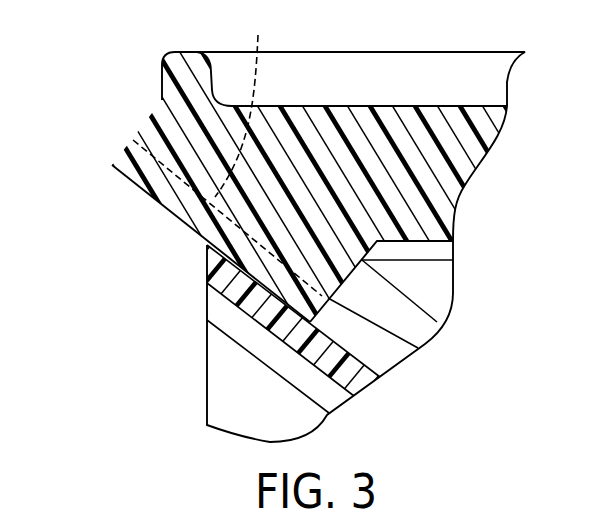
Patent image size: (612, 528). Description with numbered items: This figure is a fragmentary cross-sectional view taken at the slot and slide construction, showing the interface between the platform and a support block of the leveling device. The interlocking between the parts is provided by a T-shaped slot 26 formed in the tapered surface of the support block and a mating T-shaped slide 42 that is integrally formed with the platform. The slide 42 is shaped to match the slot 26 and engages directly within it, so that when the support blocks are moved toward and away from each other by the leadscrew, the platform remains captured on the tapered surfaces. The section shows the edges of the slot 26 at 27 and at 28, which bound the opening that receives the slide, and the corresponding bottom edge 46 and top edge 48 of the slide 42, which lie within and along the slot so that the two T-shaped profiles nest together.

The T-shaped slot 26 is at (360, 343).
The bottom edge of the slot 27 is at (421, 303).
The top edge of the slot 28 is at (322, 339).
The T-shaped slide 42 is at (112, 117).
The bottom edge of the slide 46 is at (172, 214).
The top edge of the slide 48 is at (227, 150).